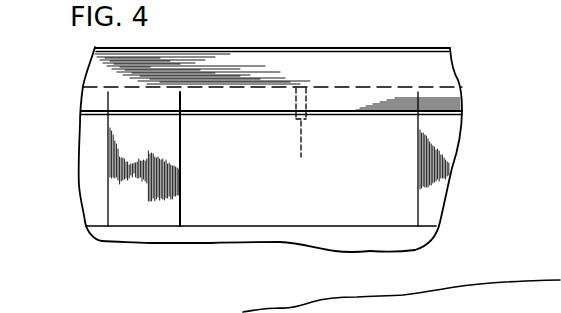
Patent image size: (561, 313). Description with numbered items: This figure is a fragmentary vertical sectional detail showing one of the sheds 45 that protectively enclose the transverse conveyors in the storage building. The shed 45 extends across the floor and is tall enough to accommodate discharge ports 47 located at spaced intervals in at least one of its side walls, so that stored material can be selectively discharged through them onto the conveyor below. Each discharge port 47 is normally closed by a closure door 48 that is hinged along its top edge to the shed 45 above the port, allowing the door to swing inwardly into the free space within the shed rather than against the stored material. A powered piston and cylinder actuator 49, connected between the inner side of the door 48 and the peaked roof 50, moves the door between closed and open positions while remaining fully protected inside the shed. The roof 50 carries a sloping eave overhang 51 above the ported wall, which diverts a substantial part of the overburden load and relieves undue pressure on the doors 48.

The shed 45 is at (430, 160).
The discharge port 47 is at (200, 168).
The closure door 48 is at (90, 182).
The piston and cylinder actuator 49 is at (307, 118).
The roof 50 is at (240, 47).
The eave overhang 51 is at (97, 97).